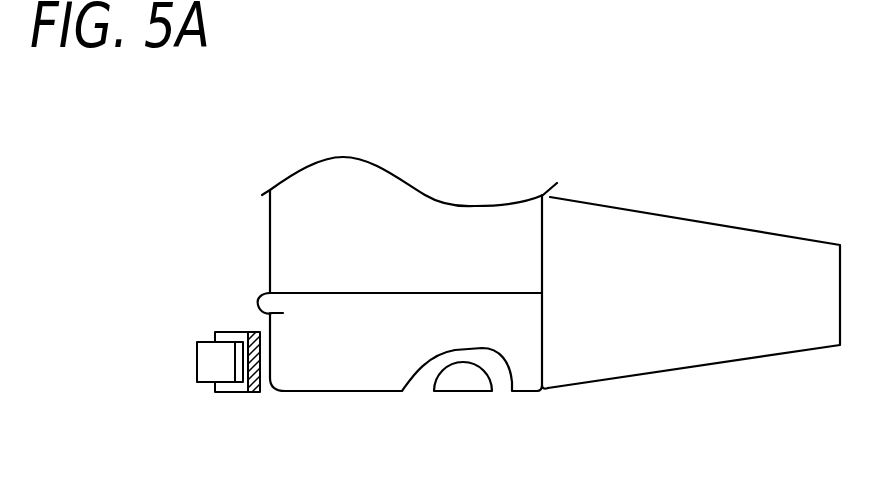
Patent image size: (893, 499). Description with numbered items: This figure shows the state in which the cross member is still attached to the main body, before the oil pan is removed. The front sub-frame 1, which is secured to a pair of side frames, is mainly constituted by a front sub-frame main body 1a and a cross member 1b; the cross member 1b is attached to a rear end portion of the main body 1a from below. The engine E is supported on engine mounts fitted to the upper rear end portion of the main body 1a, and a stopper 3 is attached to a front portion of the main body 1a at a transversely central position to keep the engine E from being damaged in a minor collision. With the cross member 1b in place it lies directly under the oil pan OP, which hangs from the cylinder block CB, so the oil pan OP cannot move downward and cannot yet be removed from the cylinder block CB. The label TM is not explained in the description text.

The engine E is at (252, 257).
The cylinder block CB is at (433, 210).
The tail member TM is at (678, 245).
The oil pan OP is at (257, 317).
The front sub-frame 1 is at (225, 418).
The front sub-frame main body 1a is at (200, 366).
The cross member 1b is at (460, 388).
The stopper 3 is at (260, 392).